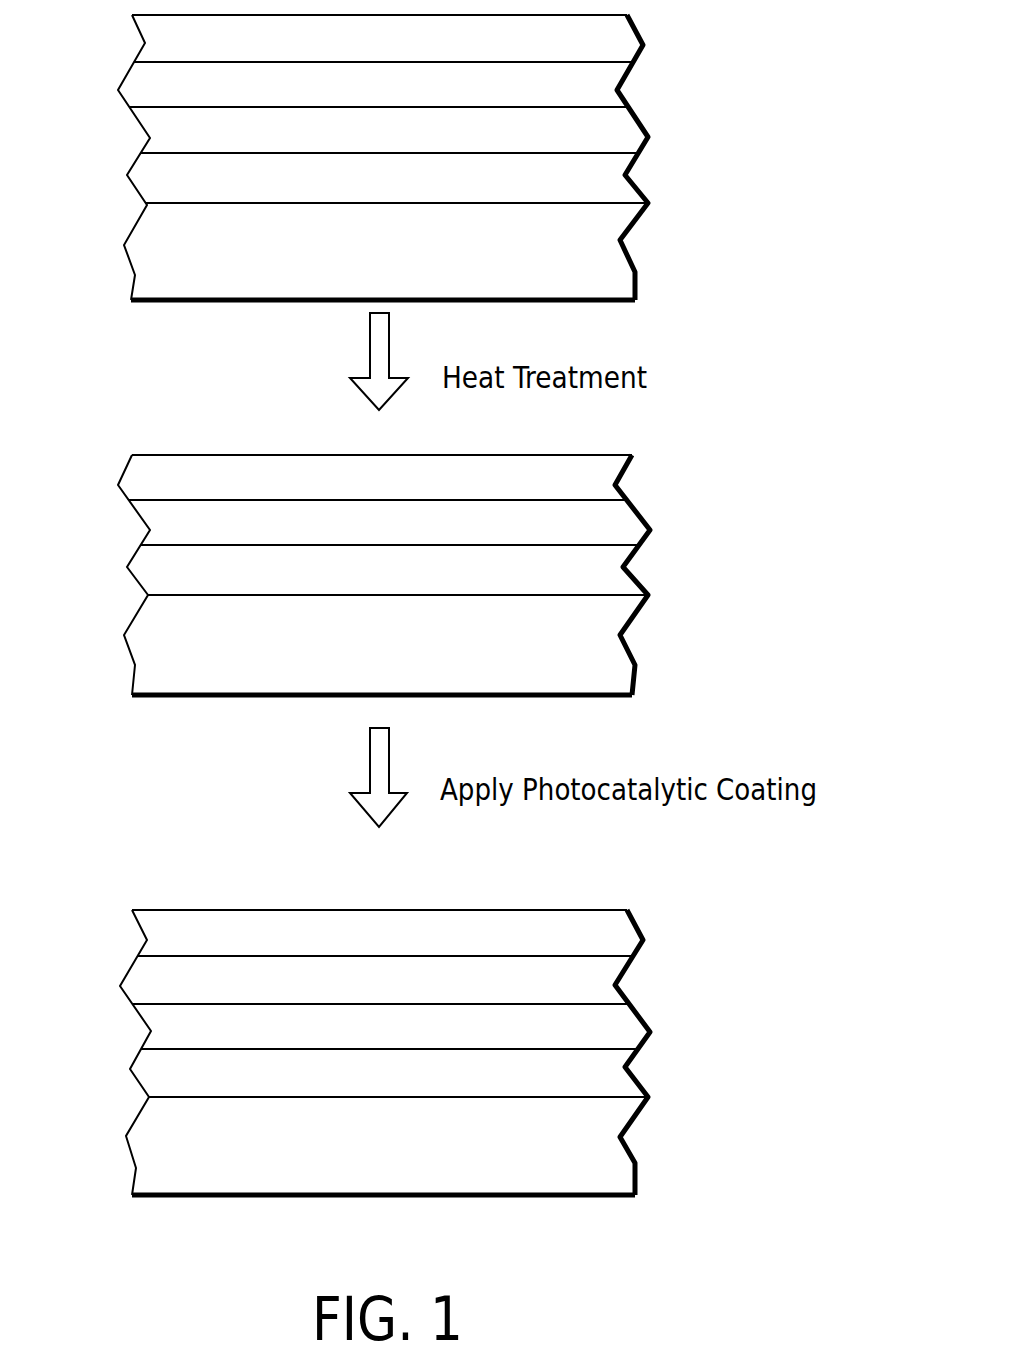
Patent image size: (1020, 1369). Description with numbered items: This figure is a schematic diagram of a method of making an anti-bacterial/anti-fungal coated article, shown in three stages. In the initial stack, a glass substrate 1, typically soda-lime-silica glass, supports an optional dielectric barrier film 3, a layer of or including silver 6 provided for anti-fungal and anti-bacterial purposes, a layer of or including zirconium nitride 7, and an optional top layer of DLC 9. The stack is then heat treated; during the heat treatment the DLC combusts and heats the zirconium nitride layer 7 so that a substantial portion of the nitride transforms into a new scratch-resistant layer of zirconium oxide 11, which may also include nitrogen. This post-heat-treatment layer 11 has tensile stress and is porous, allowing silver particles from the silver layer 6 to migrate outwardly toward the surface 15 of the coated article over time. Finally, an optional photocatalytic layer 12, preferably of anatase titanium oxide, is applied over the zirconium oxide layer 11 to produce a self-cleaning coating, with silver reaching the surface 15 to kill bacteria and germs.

The glass substrate 1 is at (607, 265).
The dielectric barrier film 3 is at (618, 183).
The silver inclusive layer 6 is at (620, 135).
The zirconium nitride layer 7 is at (604, 82).
The DLC layer 9 is at (610, 44).
The zirconium oxide layer 11 is at (603, 477).
The photocatalytic layer 12 is at (610, 938).
The surface of the coated article 15 is at (168, 453).